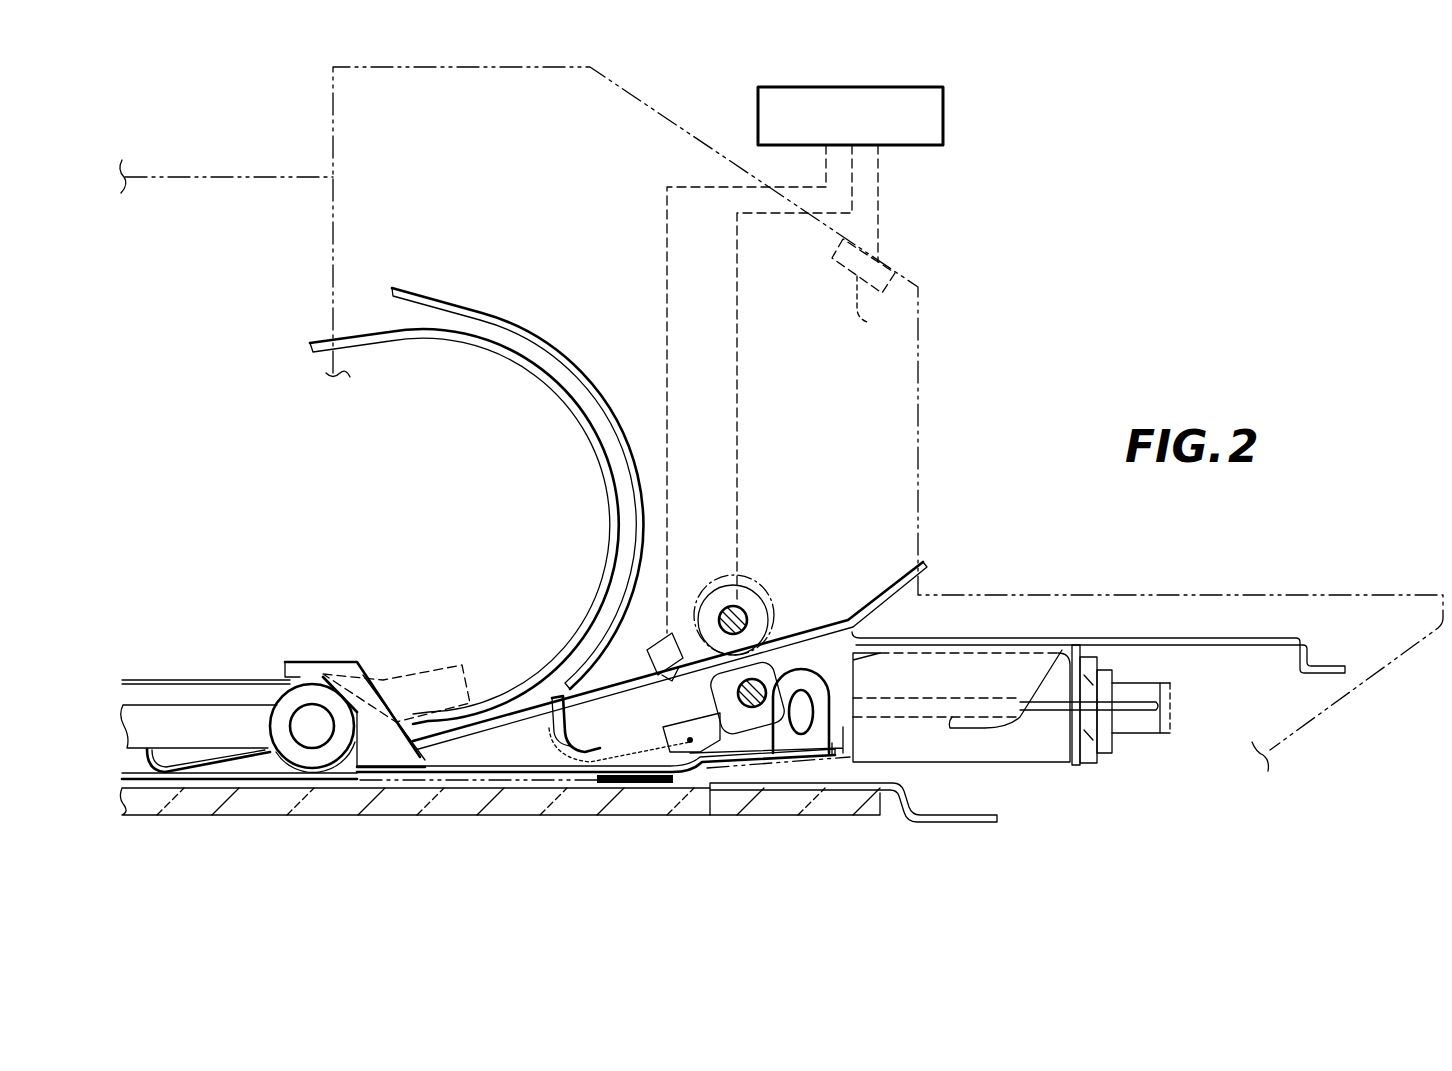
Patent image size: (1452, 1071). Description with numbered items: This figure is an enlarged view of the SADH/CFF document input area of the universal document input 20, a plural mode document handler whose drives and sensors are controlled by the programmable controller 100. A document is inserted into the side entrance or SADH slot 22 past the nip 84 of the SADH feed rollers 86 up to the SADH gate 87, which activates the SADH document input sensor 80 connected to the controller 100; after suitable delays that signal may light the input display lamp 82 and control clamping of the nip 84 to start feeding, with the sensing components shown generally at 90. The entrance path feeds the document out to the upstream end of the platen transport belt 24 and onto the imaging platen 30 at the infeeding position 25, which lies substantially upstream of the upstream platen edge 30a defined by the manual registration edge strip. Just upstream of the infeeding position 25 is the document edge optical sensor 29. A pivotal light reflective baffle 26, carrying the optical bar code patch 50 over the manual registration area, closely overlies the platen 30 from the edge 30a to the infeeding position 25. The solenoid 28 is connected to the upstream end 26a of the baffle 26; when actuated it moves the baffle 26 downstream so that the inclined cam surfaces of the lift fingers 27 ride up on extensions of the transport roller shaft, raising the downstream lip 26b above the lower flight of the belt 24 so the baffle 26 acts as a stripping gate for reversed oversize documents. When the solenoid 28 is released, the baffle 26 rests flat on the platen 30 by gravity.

The universal document input 20 is at (953, 199).
The SADH slot 22 is at (905, 619).
The platen transport belt 24 is at (160, 760).
The infeeding position 25 is at (351, 780).
The baffle 26 is at (547, 767).
The upstream end of baffle 26a is at (783, 740).
The downstream end of baffle 26b is at (368, 717).
The lift fingers 27 is at (357, 690).
The solenoid 28 is at (1052, 763).
The document edge optical sensor 29 is at (410, 667).
The imaging platen 30 is at (470, 802).
The upstream platen edge 30a is at (707, 790).
The optical bar code patch 50 is at (629, 784).
The SADH document input sensor 80 is at (667, 636).
The input display lamp 82 is at (868, 286).
The nip 84 is at (770, 655).
The SADH feed rollers 86 is at (750, 597).
The SADH gate 87 is at (560, 740).
The sensing assembly 90 is at (756, 496).
The controller 100 is at (892, 86).